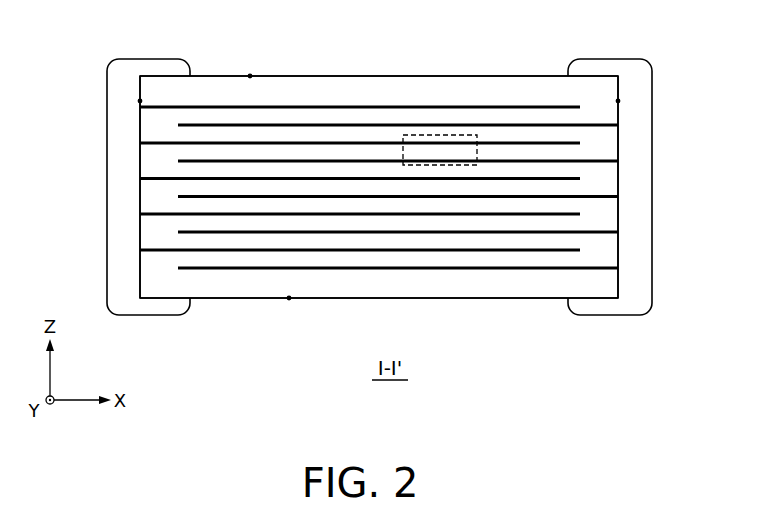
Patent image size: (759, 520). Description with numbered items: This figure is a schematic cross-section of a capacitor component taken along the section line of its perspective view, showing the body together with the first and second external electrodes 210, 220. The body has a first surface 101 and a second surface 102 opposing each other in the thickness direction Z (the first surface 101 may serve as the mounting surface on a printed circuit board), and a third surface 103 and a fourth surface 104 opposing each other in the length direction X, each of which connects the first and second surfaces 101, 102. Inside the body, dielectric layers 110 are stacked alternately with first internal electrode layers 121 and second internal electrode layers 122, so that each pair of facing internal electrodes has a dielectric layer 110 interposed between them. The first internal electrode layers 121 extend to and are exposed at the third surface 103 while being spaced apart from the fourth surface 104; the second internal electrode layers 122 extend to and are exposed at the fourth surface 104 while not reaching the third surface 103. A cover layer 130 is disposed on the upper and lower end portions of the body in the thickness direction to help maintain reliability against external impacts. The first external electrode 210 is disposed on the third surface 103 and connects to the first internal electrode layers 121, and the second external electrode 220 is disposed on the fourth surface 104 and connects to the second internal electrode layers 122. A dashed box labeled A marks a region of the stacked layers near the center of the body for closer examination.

The first surface 101 is at (289, 298).
The second surface 102 is at (250, 76).
The third surface 103 is at (140, 101).
The fourth surface 104 is at (618, 101).
The dielectric layer 110 is at (494, 117).
The first internal electrode layer 121 is at (308, 107).
The second internal electrode layer 122 is at (368, 125).
The cover layer 130 is at (555, 76).
The first external electrode 210 is at (122, 221).
The second external electrode 220 is at (637, 221).
The enlarged region A is at (434, 133).